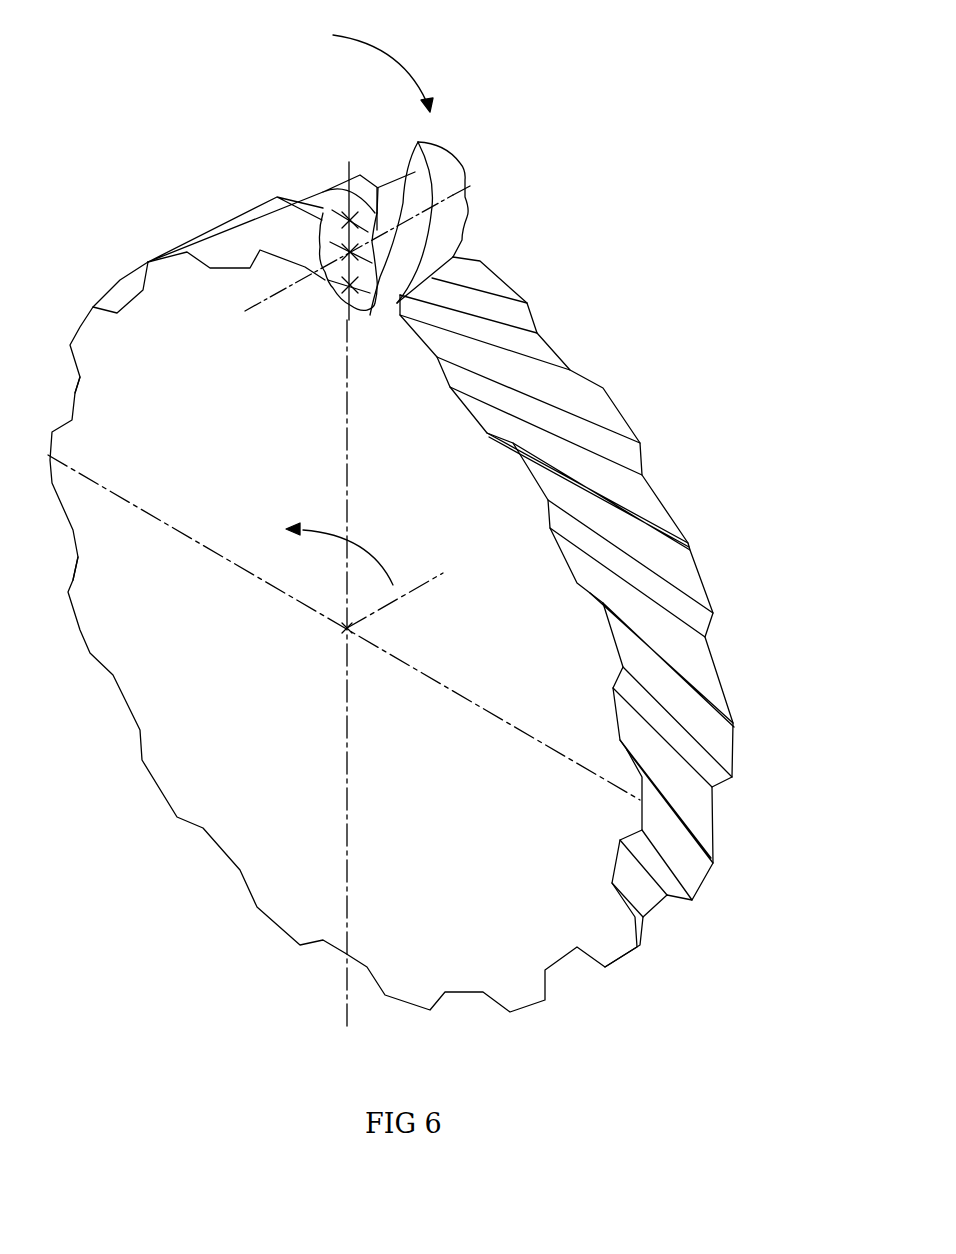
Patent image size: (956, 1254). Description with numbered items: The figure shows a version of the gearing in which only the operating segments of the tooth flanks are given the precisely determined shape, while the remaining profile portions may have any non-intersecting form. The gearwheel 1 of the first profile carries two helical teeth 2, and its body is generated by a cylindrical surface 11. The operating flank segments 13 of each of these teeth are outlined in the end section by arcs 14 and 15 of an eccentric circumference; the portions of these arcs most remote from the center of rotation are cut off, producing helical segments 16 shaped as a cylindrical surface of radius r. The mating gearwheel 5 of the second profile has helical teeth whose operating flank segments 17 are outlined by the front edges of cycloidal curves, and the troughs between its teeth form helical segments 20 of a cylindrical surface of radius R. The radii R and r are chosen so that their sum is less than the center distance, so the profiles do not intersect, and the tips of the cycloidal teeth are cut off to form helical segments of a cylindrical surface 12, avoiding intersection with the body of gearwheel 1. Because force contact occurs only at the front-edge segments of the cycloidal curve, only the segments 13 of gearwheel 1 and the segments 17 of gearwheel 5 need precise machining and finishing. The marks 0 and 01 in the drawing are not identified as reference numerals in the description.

The gearwheel of the first profile 1 is at (492, 121).
The helical teeth 2 is at (343, 208).
The gearwheel of the second profile 5 is at (722, 460).
The cylindrical surface 11 is at (397, 195).
The cylindrical surface 12 is at (642, 539).
The operating flank segments 13 is at (403, 277).
The arc of the eccentric circumference 14 is at (340, 297).
The arc of the eccentric circumference 15 is at (331, 288).
The helical segments 16 is at (343, 187).
The operating flank segments 17 is at (683, 810).
The helical segments 20 is at (668, 628).
The tool center 0 is at (349, 267).
The tool axis 01 is at (453, 195).